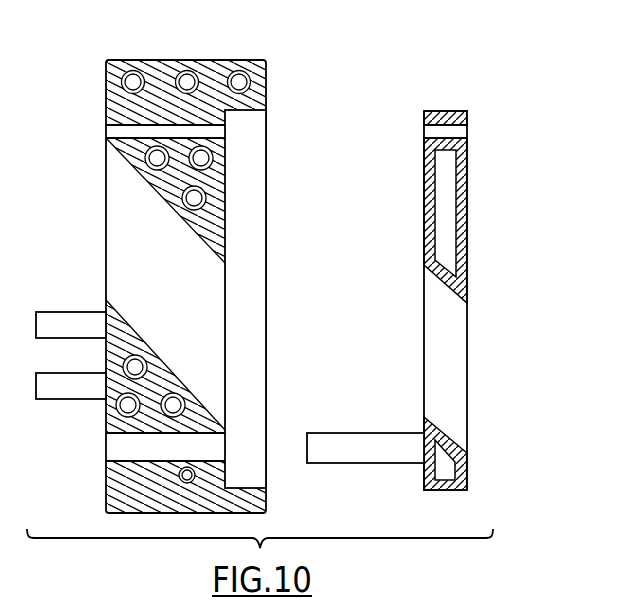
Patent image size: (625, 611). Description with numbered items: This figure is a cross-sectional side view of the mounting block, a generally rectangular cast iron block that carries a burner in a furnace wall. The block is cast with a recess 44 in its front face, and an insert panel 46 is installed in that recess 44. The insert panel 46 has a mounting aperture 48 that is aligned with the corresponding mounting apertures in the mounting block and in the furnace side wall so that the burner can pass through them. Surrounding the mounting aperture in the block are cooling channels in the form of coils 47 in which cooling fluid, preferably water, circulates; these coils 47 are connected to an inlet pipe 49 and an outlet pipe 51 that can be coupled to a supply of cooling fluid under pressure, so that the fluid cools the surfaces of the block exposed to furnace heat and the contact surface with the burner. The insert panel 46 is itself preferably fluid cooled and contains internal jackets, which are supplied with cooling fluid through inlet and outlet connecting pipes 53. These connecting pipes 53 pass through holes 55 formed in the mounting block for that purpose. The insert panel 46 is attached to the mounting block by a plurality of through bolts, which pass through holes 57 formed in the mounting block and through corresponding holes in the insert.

The recess 44 is at (257, 155).
The insert panel 46 is at (472, 164).
The coils 47 is at (239, 70).
The mounting aperture 48 is at (460, 368).
The inlet pipe 49 is at (55, 312).
The outlet pipe 51 is at (55, 373).
The inlet and outlet connecting pipes 53 is at (378, 463).
The holes 55 is at (112, 452).
The holes 57 is at (106, 135).